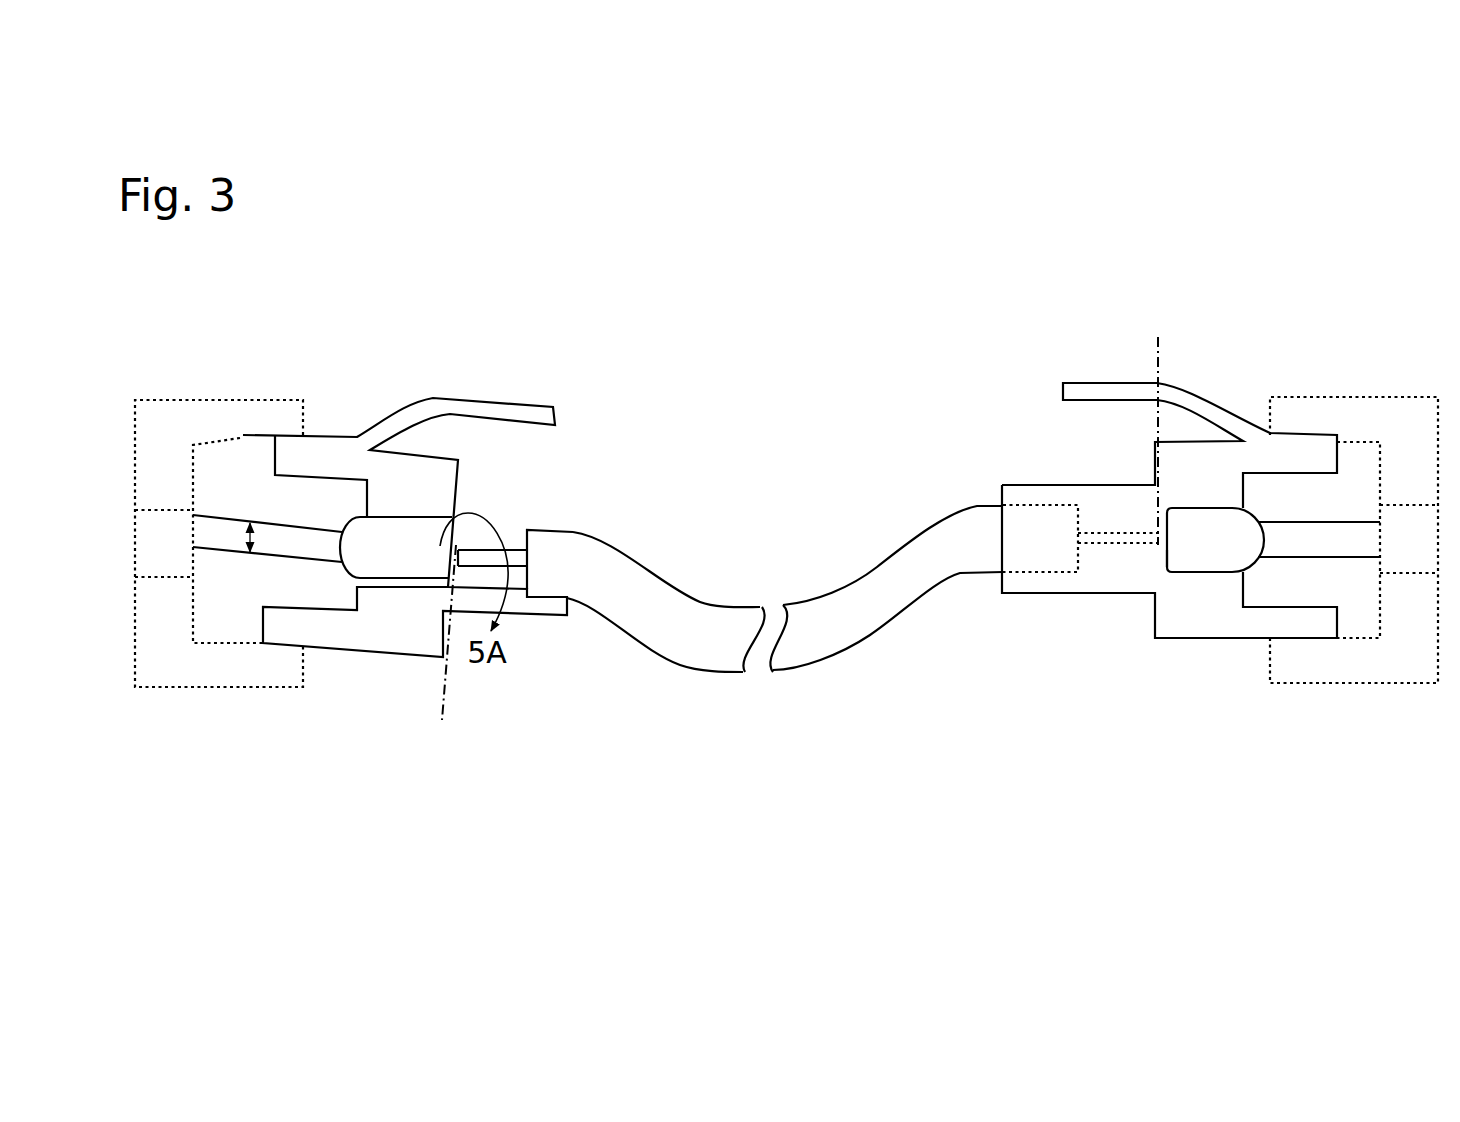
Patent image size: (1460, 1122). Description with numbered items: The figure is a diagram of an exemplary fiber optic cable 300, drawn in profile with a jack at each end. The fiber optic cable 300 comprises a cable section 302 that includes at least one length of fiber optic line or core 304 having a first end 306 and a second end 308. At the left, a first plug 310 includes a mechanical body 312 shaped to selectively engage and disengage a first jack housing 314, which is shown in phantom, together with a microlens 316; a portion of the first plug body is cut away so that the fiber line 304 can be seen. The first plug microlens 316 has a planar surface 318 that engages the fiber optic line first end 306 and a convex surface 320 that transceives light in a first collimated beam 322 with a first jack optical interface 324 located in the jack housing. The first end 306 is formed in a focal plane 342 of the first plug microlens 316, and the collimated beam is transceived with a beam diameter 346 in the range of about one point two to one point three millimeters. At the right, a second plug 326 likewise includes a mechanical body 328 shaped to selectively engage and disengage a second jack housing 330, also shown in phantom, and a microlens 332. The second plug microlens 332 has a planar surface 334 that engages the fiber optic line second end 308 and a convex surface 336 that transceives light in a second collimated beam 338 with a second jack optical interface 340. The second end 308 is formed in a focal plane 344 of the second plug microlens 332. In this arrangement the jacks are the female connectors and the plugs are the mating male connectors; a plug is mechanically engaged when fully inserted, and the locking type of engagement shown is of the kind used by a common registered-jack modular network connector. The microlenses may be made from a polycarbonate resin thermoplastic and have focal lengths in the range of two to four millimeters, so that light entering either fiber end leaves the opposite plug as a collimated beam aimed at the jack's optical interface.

The fiber optic cable 300 is at (1127, 210).
The cable section 302 is at (769, 508).
The fiber optic line 304 is at (513, 553).
The first end 306 is at (468, 536).
The second end 308 is at (1150, 514).
The first plug 310 is at (420, 628).
The mechanical body 312 is at (433, 641).
The first jack housing 314 is at (185, 400).
The microlens 316 is at (375, 561).
The planar surface 318 is at (445, 568).
The convex surface 320 is at (346, 543).
The first collimated beam 322 is at (283, 540).
The first jack optical interface 324 is at (200, 713).
The second plug 326 is at (1133, 703).
The mechanical body 328 is at (1255, 468).
The second jack housing 330 is at (1333, 675).
The microlens 332 is at (1195, 555).
The planar surface 334 is at (1160, 558).
The convex surface 336 is at (1264, 508).
The second collimated beam 338 is at (1298, 555).
The second jack optical interface 340 is at (1388, 555).
The focal plane 342 is at (455, 678).
The focal plane 344 is at (1157, 348).
The beam diameter 346 is at (250, 528).